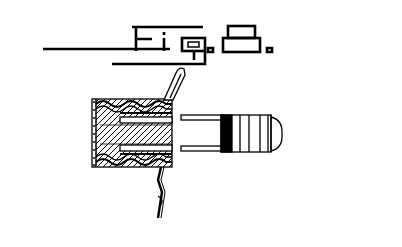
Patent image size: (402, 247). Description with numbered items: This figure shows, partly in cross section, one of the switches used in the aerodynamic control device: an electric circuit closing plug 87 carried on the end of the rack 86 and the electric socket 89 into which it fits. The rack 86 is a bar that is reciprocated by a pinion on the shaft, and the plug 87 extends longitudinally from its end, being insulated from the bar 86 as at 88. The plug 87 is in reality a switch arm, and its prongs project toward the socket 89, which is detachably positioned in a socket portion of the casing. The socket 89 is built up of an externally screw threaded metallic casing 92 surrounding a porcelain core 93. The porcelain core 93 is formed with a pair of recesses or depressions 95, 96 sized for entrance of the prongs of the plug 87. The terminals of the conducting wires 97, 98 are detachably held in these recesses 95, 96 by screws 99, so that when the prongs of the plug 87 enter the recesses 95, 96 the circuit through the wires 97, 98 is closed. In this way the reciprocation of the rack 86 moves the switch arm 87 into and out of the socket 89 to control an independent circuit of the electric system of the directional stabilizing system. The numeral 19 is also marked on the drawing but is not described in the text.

The lower wavy spring strip 19 is at (110, 166).
The rack 86 is at (274, 152).
The electric circuit closing plug 87 is at (203, 114).
The insulation 88 is at (273, 120).
The electric socket 89 is at (91, 126).
The externally screw threaded metallic casing 92 is at (101, 165).
The porcelain core 93 is at (113, 131).
The recess 95 is at (171, 154).
The recess 96 is at (174, 116).
The conducting wire 97 is at (165, 203).
The conducting wire 98 is at (169, 84).
The screw 99 is at (110, 100).